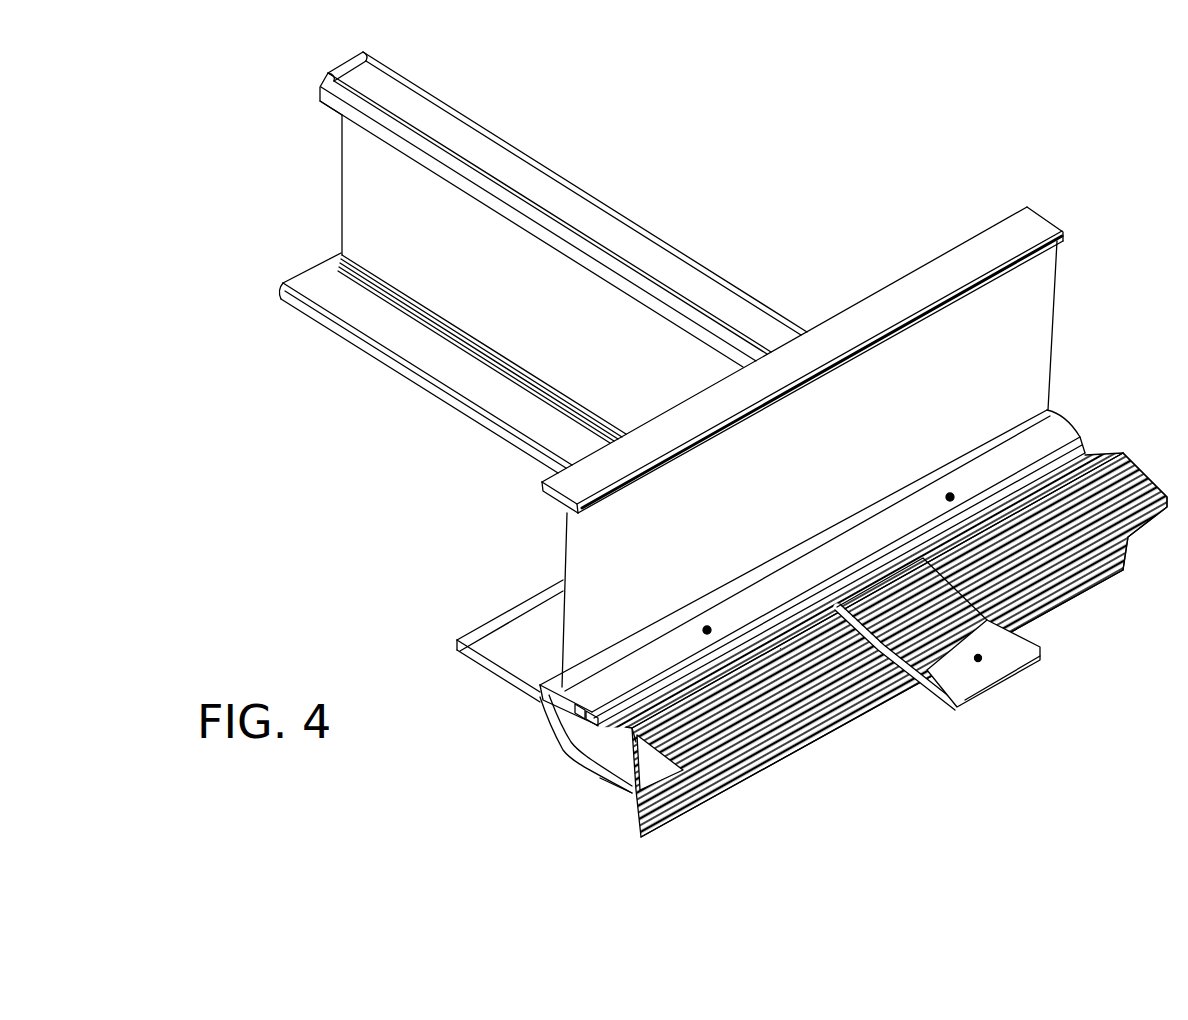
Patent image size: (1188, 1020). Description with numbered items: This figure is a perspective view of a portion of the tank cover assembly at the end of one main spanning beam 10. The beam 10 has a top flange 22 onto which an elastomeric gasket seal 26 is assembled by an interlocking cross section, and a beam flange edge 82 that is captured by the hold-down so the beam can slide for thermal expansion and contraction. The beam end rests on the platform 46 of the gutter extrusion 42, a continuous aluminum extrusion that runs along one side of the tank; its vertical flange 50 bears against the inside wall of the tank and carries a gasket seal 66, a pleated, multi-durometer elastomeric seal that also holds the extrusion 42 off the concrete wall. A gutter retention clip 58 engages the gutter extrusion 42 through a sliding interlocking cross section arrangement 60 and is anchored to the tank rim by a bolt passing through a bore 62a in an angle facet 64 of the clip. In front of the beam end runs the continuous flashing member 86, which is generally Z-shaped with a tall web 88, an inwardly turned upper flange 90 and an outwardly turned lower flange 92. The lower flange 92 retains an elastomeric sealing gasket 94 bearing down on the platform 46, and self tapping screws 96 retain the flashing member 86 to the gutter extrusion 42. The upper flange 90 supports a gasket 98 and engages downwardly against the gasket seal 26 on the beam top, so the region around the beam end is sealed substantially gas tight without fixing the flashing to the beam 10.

The main spanning beam 10 is at (322, 210).
The top flange of the beam 22 is at (315, 97).
The elastomeric gasket seal 26 is at (526, 148).
The beam flange edge 82 is at (370, 345).
The flashing member 86 is at (838, 468).
The gasket 98 is at (1022, 230).
The upper flange of the flashing 90 is at (546, 492).
The web of the flashing 88 is at (563, 560).
The self tapping screw 96 is at (953, 492).
The lower flange of the flashing 92 is at (540, 716).
The elastomeric sealing gasket 94 is at (592, 713).
The platform 46 is at (488, 625).
The gutter extrusion 42 is at (565, 775).
The vertical flange 50 is at (630, 803).
The gasket seal 66 is at (672, 806).
The sliding interlocking cross section arrangement 60 is at (1133, 460).
The gutter retention clip 58 is at (1042, 647).
The angle facet of the clip 64 is at (956, 686).
The bore 62a is at (979, 664).